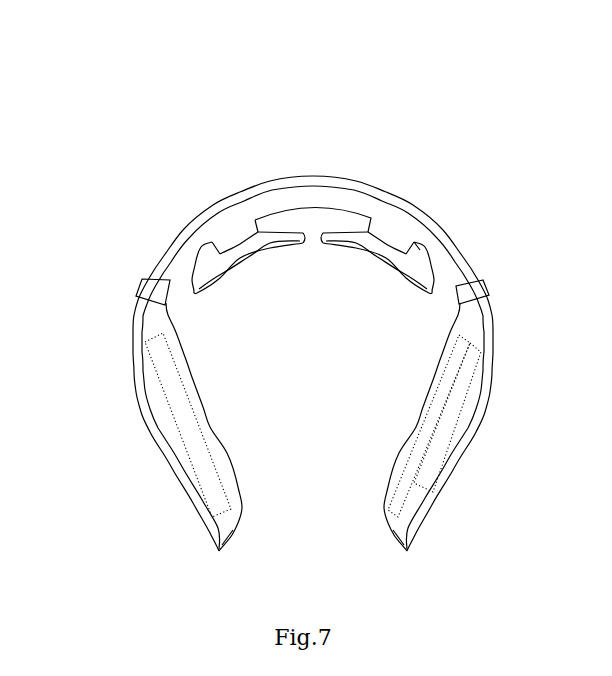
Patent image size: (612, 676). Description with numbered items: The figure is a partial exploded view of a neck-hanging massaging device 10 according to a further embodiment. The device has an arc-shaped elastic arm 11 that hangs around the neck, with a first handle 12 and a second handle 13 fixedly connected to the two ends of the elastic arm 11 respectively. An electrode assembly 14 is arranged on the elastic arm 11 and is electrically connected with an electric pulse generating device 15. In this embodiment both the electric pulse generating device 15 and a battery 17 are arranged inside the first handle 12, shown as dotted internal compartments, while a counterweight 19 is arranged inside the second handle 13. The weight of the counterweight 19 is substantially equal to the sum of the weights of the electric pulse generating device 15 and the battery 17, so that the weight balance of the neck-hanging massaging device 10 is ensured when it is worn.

The neck-hanging massaging device 10 is at (277, 52).
The elastic arm 11 is at (355, 192).
The first handle 12 is at (477, 323).
The second handle 13 is at (145, 314).
The electrode assembly 14 is at (413, 272).
The electric pulse generating device 15 is at (406, 445).
The battery 17 is at (453, 405).
The counterweight 19 is at (217, 485).